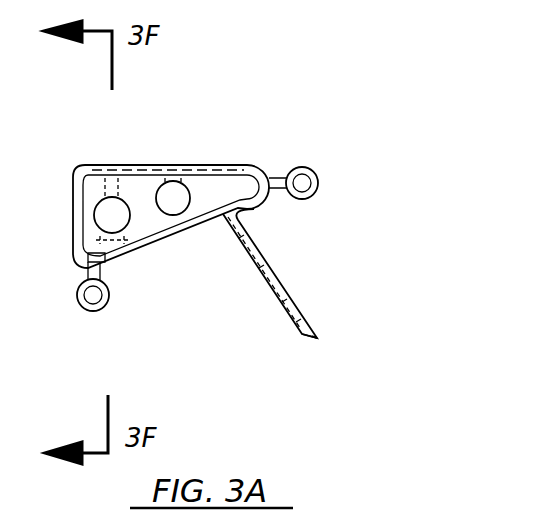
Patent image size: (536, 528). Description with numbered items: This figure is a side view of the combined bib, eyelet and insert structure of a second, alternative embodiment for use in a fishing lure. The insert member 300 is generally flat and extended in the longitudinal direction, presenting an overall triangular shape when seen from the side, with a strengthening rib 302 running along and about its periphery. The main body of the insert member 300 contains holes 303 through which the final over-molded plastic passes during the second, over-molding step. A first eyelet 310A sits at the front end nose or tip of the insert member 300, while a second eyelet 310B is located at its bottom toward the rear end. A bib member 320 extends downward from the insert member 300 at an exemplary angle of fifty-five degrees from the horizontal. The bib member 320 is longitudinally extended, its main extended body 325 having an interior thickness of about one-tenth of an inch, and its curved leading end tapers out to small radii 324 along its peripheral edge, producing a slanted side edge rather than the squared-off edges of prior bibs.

The insert member 300 is at (169, 153).
The strengthening rib 302 is at (220, 164).
The holes 303 is at (104, 211).
The first eyelet 310A is at (315, 174).
The second eyelet 310B is at (93, 311).
The bib member 320 is at (302, 290).
The small radii 324 is at (312, 343).
The main extended body 325 is at (277, 301).